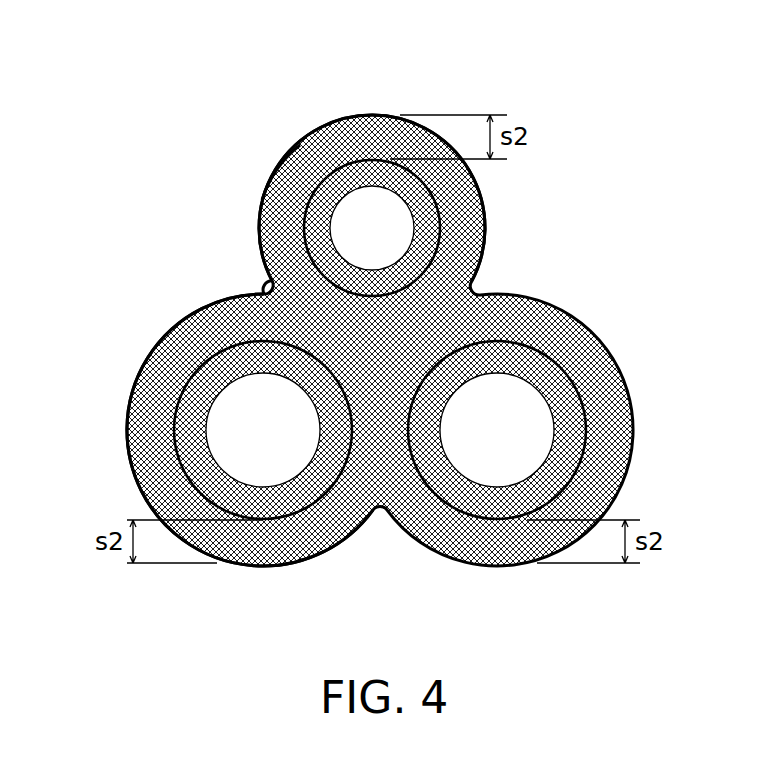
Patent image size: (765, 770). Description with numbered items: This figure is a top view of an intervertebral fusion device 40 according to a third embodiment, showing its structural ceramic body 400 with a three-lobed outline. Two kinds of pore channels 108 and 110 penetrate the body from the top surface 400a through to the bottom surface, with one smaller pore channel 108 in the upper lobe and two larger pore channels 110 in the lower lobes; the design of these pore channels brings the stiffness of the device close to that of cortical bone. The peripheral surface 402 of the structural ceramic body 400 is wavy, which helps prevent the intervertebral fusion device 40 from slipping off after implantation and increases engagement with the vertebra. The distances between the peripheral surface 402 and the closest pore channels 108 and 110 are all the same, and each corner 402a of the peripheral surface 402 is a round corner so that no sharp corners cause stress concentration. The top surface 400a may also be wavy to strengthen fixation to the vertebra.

The intervertebral fusion device 40 is at (151, 48).
The pore channel 108 is at (364, 215).
The pore channel 110 is at (236, 443).
The structural ceramic body 400 is at (150, 350).
The top surface 400a is at (270, 217).
The peripheral surface 402 is at (485, 203).
The corner 402a is at (252, 291).